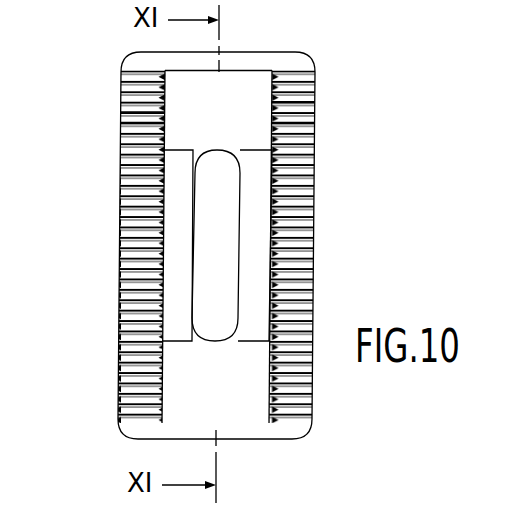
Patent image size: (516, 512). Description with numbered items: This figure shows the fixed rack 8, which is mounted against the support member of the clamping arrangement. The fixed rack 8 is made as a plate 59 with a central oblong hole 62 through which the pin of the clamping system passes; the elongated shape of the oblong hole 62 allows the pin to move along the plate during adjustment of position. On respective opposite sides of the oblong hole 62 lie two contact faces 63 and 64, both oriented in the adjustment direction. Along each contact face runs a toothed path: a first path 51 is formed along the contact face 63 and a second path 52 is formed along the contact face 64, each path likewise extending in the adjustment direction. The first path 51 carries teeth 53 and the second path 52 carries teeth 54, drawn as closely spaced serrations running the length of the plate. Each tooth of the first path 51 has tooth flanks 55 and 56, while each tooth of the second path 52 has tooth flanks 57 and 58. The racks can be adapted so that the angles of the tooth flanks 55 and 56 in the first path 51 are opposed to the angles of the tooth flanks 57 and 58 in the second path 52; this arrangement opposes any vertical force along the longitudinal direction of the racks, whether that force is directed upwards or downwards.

The fixed rack 8 is at (110, 80).
The path 51 is at (113, 328).
The path 52 is at (312, 376).
The teeth 53 is at (138, 268).
The teeth 54 is at (300, 272).
The tooth flank 55 is at (138, 123).
The tooth flank 56 is at (146, 128).
The tooth flank 57 is at (305, 106).
The tooth flank 58 is at (297, 118).
The plate 59 is at (243, 78).
The oblong hole 62 is at (228, 244).
The contact face 63 is at (182, 189).
The contact face 64 is at (255, 178).